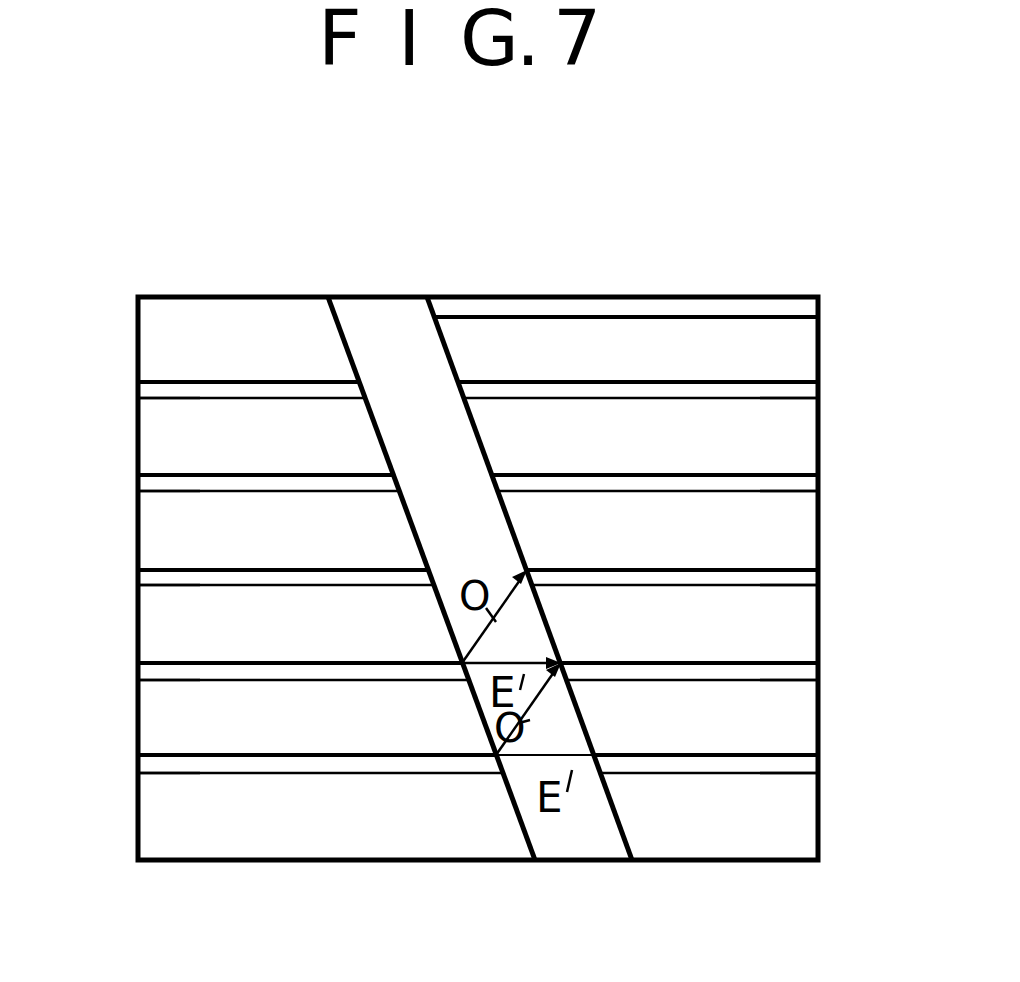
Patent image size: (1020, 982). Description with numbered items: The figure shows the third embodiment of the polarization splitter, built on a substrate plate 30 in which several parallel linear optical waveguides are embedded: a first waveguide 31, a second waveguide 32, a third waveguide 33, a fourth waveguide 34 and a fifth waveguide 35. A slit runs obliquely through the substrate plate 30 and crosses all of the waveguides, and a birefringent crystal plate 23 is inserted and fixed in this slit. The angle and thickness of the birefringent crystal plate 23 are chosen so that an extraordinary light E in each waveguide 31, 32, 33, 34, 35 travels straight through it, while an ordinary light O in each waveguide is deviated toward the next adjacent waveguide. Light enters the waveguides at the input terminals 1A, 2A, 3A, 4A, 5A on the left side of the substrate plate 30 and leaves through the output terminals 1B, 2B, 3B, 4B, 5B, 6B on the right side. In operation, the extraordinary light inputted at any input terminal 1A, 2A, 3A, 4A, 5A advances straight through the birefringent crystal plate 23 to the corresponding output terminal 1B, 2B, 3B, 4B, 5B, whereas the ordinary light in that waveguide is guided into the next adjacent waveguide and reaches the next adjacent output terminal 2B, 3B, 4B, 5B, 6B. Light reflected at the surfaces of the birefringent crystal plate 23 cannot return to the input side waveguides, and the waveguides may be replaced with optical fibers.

The birefringent crystal plate 23 is at (403, 322).
The substrate plate 30 is at (779, 843).
The first waveguide 31 is at (163, 772).
The second waveguide 32 is at (478, 643).
The third waveguide 33 is at (478, 551).
The fourth waveguide 34 is at (478, 456).
The fifth waveguide 35 is at (478, 365).
The input terminal 1A is at (129, 764).
The input terminal 2A is at (126, 674).
The input terminal 3A is at (126, 584).
The input terminal 4A is at (125, 474).
The input terminal 5A is at (125, 384).
The output terminal 1B is at (832, 766).
The output terminal 2B is at (833, 674).
The output terminal 3B is at (833, 584).
The output terminal 4B is at (833, 496).
The output terminal 5B is at (833, 389).
The output terminal 6B is at (669, 321).